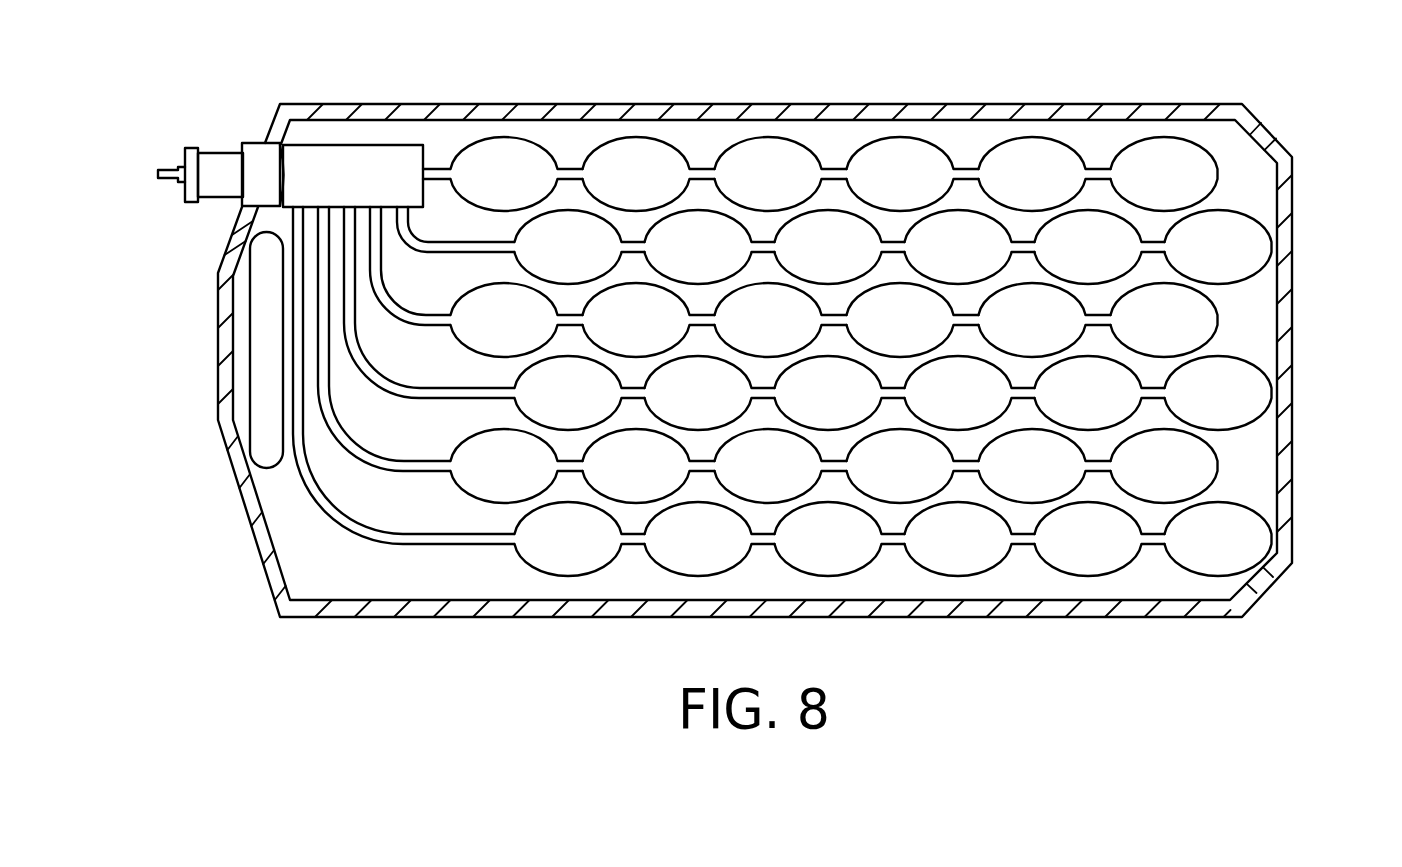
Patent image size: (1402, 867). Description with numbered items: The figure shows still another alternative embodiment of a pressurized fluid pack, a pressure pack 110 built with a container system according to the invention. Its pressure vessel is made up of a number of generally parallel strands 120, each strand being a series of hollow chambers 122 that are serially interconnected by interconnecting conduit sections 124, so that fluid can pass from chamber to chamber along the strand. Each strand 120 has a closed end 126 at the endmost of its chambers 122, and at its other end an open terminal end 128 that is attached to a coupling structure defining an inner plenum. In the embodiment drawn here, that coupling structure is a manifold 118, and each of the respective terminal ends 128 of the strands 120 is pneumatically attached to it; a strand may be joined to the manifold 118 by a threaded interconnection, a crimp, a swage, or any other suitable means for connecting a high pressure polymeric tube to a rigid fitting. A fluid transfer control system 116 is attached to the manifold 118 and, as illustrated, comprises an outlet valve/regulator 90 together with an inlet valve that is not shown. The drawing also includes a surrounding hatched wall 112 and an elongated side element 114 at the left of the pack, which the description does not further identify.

The outlet valve/regulator 90 is at (170, 141).
The pressure pack 110 is at (799, 322).
The frame wall 112 is at (1297, 150).
The side chamber 114 is at (258, 362).
The fluid transfer control system 116 is at (212, 120).
The manifold 118 is at (393, 140).
The strands 120 is at (904, 312).
The hollow chambers 122 is at (1162, 145).
The interconnecting conduit sections 124 is at (968, 168).
The closed end 126 is at (1219, 320).
The open terminal end 128 is at (437, 168).